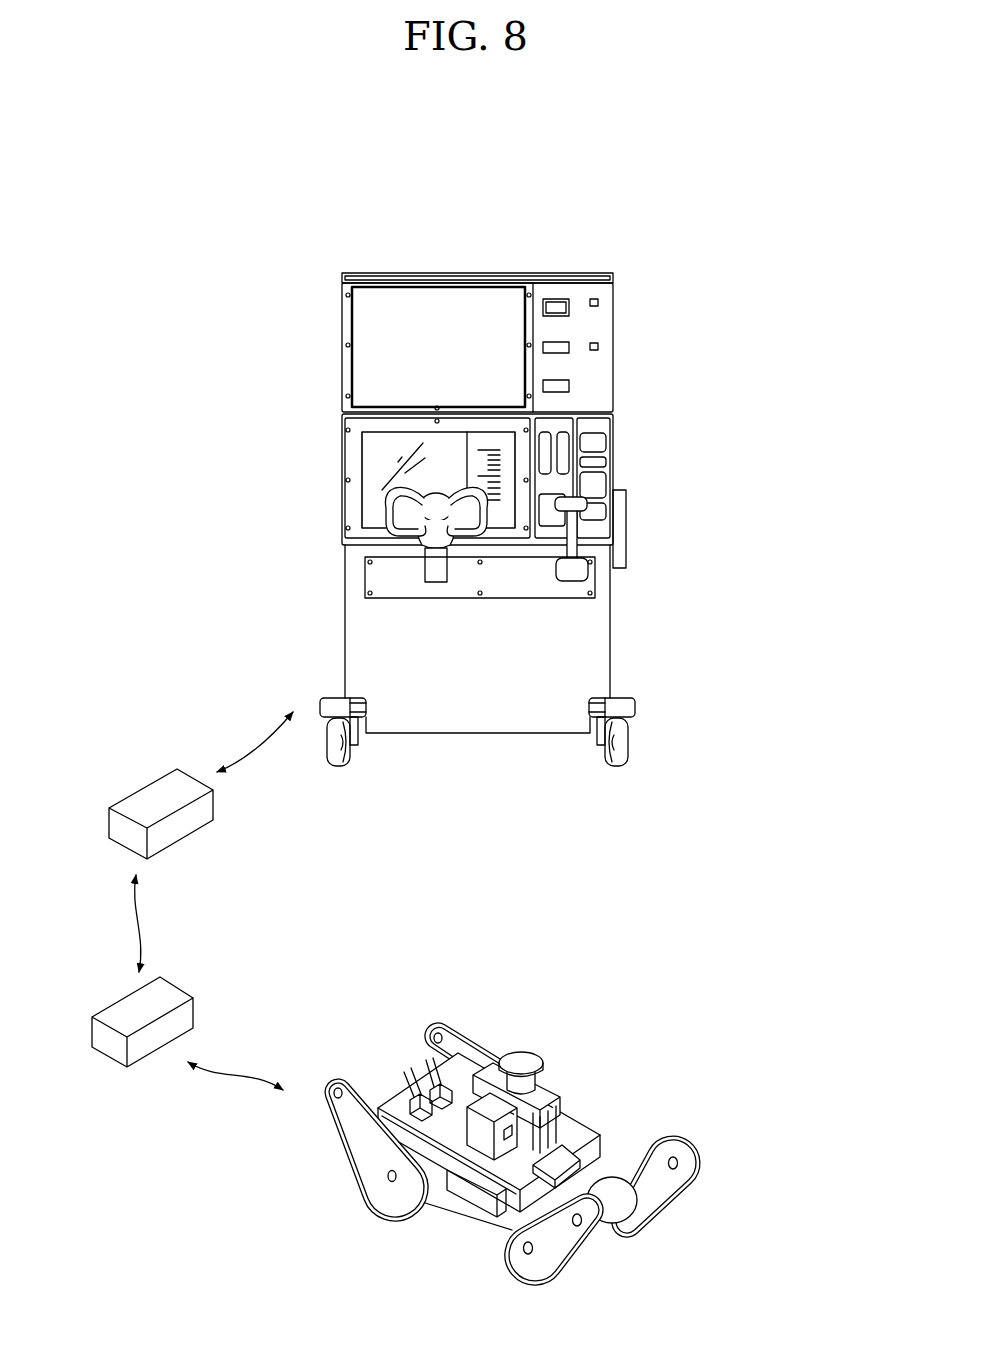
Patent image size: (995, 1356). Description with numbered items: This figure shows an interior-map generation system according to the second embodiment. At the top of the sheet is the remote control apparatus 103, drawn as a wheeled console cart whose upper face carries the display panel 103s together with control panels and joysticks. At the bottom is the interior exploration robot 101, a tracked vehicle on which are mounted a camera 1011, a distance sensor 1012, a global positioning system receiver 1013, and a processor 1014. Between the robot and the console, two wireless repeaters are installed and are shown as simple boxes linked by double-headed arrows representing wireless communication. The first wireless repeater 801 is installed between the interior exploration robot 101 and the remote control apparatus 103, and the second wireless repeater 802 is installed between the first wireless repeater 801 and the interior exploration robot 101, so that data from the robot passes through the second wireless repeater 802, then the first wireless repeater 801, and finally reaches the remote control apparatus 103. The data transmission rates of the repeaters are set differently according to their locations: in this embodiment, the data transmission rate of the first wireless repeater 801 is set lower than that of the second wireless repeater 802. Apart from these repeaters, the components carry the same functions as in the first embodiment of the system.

The remote control apparatus 103 is at (620, 237).
The display panel 103s is at (392, 300).
The first wireless repeater 801 is at (153, 790).
The second wireless repeater 802 is at (112, 1009).
The interior exploration robot 101 is at (684, 1010).
The camera 1011 is at (525, 1132).
The distance sensor 1012 is at (520, 1058).
The global positioning system (GPS) receiver 1013 is at (574, 1160).
The processor 1014 is at (452, 1128).